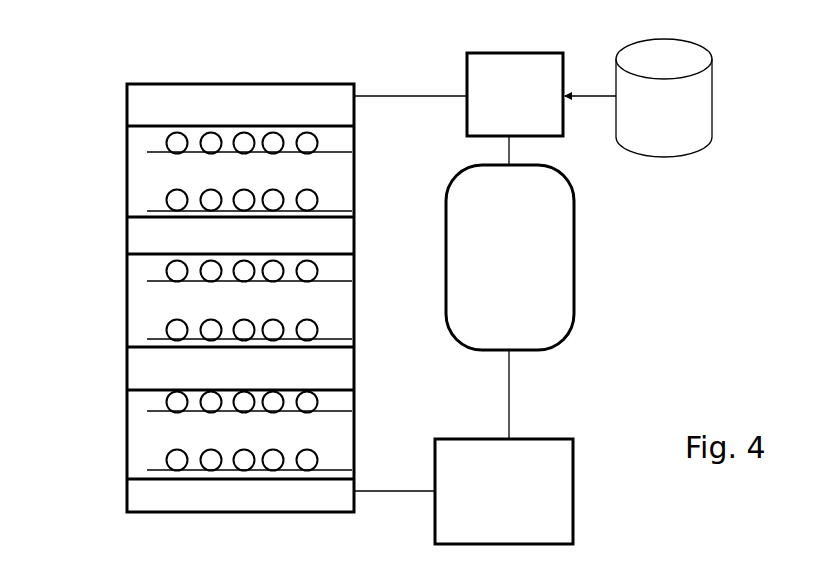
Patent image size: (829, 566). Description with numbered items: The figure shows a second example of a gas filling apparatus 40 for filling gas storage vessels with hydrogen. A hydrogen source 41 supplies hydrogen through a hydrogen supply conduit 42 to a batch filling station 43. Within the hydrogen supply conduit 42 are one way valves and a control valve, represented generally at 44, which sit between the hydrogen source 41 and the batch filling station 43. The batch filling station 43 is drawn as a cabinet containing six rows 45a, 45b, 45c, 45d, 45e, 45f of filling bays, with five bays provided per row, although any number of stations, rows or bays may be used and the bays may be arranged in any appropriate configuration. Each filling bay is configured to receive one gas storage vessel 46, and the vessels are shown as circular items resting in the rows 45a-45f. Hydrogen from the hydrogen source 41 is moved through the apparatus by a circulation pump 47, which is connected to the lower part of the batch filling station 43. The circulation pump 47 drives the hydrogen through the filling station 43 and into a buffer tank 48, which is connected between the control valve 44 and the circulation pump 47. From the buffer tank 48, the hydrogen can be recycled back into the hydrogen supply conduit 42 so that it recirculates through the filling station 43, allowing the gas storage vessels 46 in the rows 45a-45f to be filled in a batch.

The gas filling apparatus 40 is at (135, 42).
The hydrogen source 41 is at (664, 98).
The hydrogen supply conduit 42 is at (591, 94).
The batch filling station 43 is at (223, 85).
The control valve 44 is at (458, 109).
The row of filling bays 45a is at (112, 143).
The row of filling bays 45b is at (113, 192).
The row of filling bays 45c is at (113, 276).
The row of filling bays 45d is at (113, 328).
The row of filling bays 45e is at (113, 407).
The row of filling bays 45f is at (113, 459).
The gas storage vessel 46 is at (306, 143).
The circulation pump 47 is at (463, 491).
The buffer tank 48 is at (510, 302).